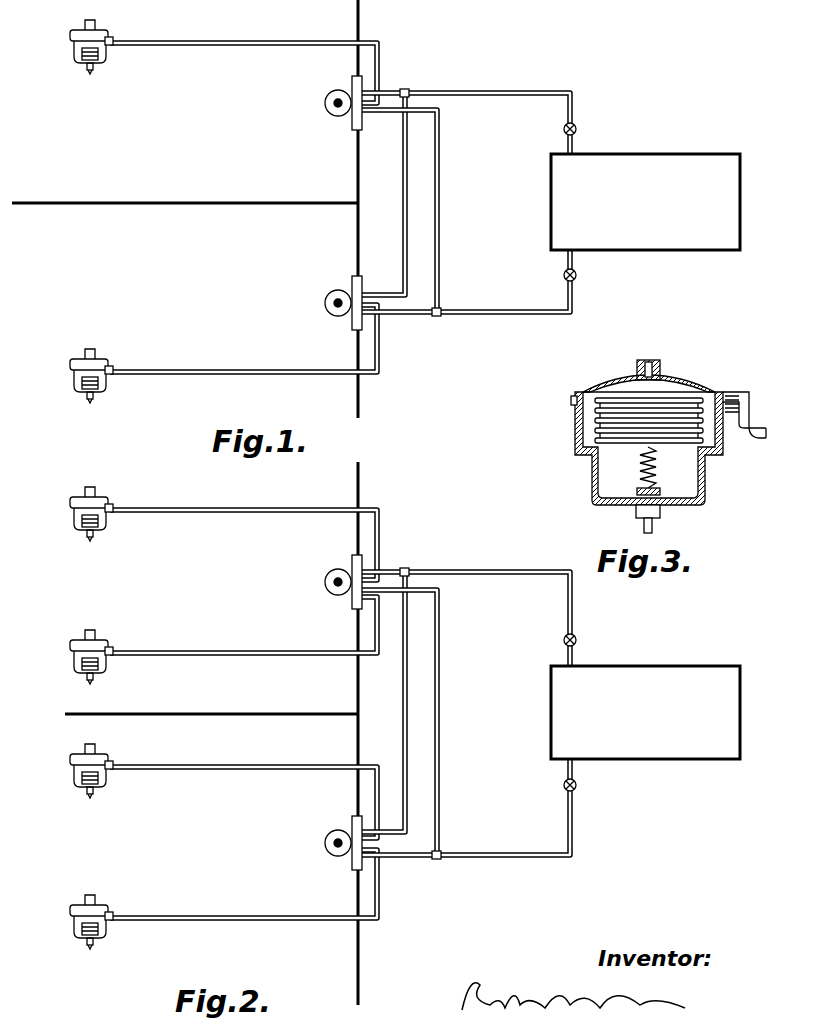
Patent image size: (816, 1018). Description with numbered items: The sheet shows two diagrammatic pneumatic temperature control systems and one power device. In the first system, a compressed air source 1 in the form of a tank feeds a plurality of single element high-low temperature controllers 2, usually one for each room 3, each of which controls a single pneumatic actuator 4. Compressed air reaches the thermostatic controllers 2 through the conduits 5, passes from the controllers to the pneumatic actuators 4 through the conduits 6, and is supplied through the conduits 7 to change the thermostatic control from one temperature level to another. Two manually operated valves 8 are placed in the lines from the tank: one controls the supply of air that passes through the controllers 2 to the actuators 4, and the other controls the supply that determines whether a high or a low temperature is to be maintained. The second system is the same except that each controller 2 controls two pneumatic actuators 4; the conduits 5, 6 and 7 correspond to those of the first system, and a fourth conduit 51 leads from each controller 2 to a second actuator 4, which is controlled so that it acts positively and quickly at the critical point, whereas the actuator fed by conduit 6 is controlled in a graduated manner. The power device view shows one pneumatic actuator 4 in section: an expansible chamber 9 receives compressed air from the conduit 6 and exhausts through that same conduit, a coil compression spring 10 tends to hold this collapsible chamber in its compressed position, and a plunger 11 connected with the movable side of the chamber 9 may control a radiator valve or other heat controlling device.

In FIG. 1, the compressed air source 1 is at (678, 245).
In FIG. 2, the compressed air source 1 is at (680, 755).
In FIG. 1, the high-low temperature controller 2 is at (328, 106).
In FIG. 2, the high-low temperature controller 2 is at (328, 585).
In FIG. 1, the room 3 is at (357, 234).
In FIG. 2, the room 3 is at (356, 524).
In FIG. 1, the pneumatic actuator 4 is at (75, 45).
In FIG. 2, the pneumatic actuator 4 is at (75, 512).
In FIG. 3, the pneumatic actuator 4 is at (582, 446).
In FIG. 1, the conduit 5 is at (386, 93).
In FIG. 2, the conduit 5 is at (386, 573).
In FIG. 1, the conduit 6 is at (220, 45).
In FIG. 2, the conduit 6 is at (190, 512).
In FIG. 3, the conduit 6 is at (748, 440).
In FIG. 1, the conduit 7 is at (438, 194).
In FIG. 2, the conduit 7 is at (440, 680).
In FIG. 1, the manually operated valve 8 is at (576, 125).
In FIG. 2, the manually operated valve 8 is at (576, 637).
In FIG. 3, the expansible chamber 9 is at (662, 402).
In FIG. 3, the coil compression spring 10 is at (644, 468).
In FIG. 3, the plunger 11 is at (654, 528).
In FIG. 2, the fourth conduit 51 is at (178, 655).